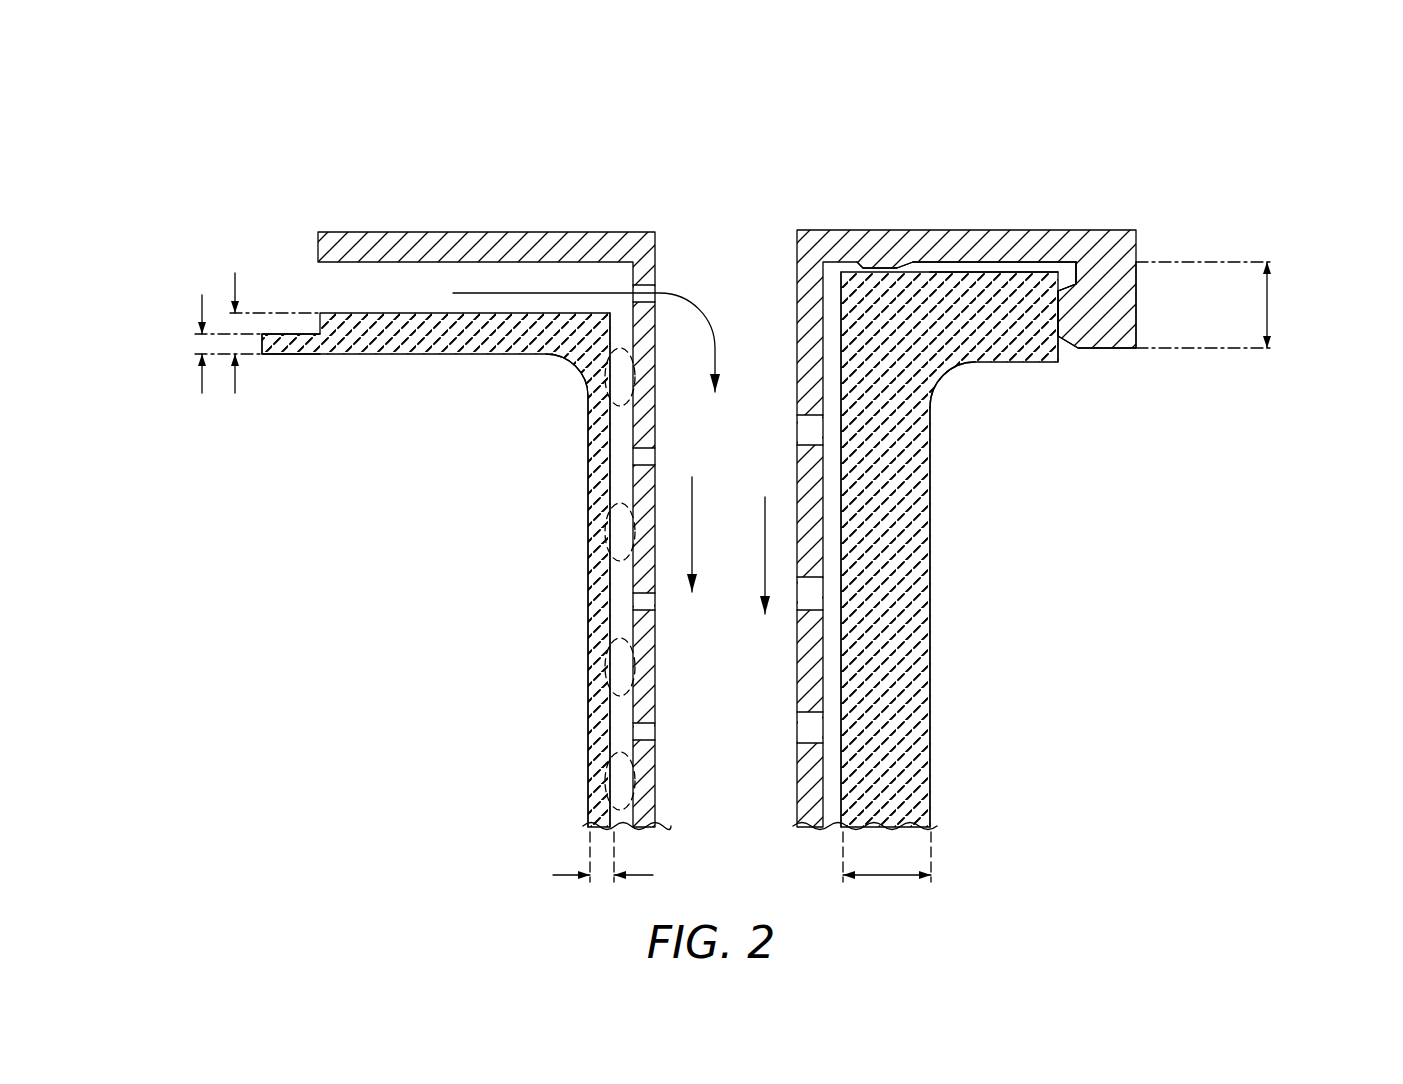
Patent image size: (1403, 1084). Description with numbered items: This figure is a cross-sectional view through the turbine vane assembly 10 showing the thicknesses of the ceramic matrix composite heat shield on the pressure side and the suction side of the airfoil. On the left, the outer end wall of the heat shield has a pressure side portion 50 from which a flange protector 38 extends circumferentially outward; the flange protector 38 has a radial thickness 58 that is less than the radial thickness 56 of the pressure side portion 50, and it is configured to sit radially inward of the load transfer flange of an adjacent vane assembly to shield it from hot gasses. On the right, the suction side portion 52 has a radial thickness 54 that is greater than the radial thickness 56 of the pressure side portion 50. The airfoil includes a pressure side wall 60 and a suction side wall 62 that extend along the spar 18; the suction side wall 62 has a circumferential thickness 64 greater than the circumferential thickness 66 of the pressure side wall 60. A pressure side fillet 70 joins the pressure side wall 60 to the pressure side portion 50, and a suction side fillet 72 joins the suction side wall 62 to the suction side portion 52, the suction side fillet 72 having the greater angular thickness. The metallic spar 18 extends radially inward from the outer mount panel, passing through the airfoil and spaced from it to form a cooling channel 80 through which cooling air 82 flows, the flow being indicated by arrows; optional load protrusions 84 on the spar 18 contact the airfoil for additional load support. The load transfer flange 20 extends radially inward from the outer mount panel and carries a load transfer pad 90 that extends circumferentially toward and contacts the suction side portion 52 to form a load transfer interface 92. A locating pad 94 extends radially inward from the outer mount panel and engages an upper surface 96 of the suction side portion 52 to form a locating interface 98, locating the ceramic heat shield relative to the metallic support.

The turbine vane assembly 10 is at (893, 108).
The spar 18 is at (805, 383).
The load transfer flange 20 is at (1112, 348).
The flange protector 38 is at (277, 357).
The pressure side portion 50 is at (417, 353).
The suction side portion 52 is at (998, 364).
The radial thickness 54 is at (1273, 303).
The radial thickness 56 is at (235, 282).
The radial thickness 58 is at (202, 385).
The pressure side wall 60 is at (587, 594).
The suction side wall 62 is at (931, 621).
The circumferential thickness 64 is at (888, 877).
The circumferential thickness 66 is at (565, 875).
The pressure side fillet 70 is at (570, 360).
The suction side fillet 72 is at (947, 373).
The cooling channel 80 is at (607, 285).
The cooling air 82 is at (677, 297).
The load protrusions 84 is at (606, 415).
The load transfer pad 90 is at (1058, 337).
The load transfer interface 92 is at (1053, 267).
The locating pad 94 is at (913, 265).
The upper surface 96 is at (1000, 267).
The locating interface 98 is at (893, 267).